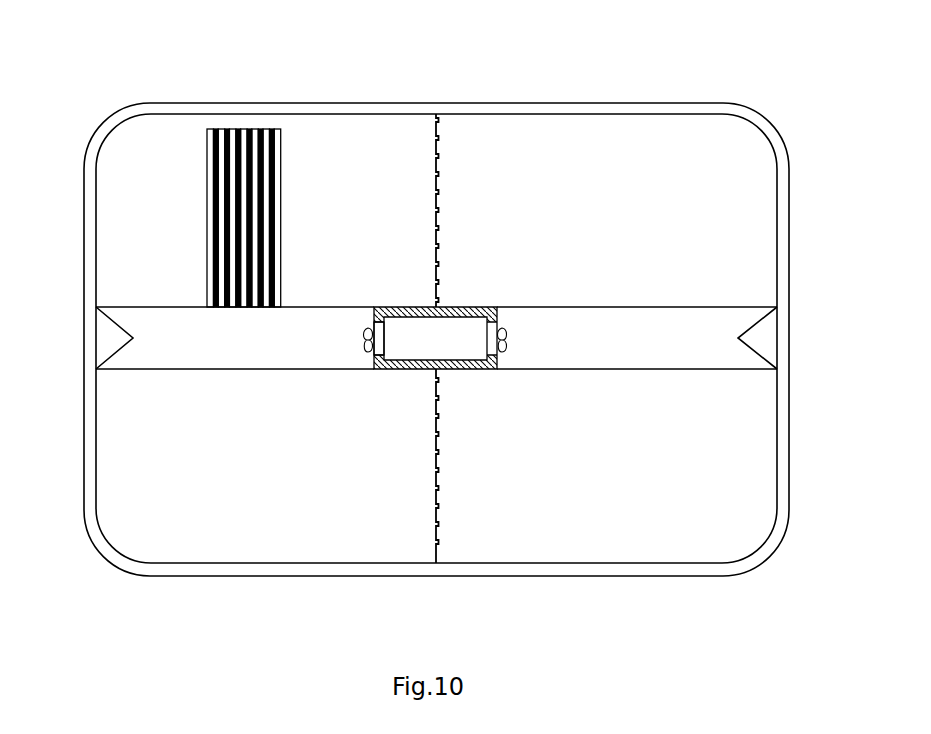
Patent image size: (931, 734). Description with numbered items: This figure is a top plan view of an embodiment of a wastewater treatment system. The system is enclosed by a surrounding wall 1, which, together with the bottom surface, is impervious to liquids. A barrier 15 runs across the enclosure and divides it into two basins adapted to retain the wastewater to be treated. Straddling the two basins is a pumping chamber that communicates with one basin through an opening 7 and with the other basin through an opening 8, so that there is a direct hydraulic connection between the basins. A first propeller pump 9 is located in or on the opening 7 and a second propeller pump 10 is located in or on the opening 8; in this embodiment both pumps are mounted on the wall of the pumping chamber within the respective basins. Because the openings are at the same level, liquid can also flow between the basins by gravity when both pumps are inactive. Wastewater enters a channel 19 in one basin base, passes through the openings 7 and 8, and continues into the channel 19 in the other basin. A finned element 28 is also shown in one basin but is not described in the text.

The surrounding wall 1 is at (753, 118).
The opening 7 is at (493, 349).
The opening 8 is at (379, 348).
The first propeller pump 9 is at (505, 336).
The second propeller pump 10 is at (367, 340).
The barrier 15 is at (436, 152).
The channel 19 is at (228, 338).
The fin stack 28 is at (230, 153).